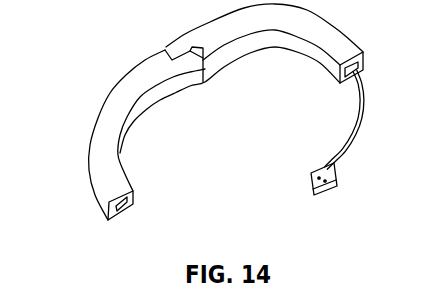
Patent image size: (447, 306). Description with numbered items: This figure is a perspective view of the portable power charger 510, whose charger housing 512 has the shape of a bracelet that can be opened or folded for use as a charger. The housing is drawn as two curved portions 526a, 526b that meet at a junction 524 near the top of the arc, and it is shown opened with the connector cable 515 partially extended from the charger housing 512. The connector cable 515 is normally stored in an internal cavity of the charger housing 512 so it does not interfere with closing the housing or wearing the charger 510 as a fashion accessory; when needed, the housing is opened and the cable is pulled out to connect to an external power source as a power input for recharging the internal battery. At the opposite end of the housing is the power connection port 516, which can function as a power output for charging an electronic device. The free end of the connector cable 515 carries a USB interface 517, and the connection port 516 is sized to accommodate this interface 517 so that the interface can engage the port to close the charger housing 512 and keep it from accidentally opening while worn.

The portable power charger 510 is at (232, 118).
The charger housing 512 is at (103, 160).
The connector cable 515 is at (361, 103).
The power connection port 516 is at (127, 203).
The USB interface 517 is at (337, 174).
The hinge 524 is at (208, 93).
The first headband portion 526a is at (112, 100).
The second headband portion 526b is at (294, 45).